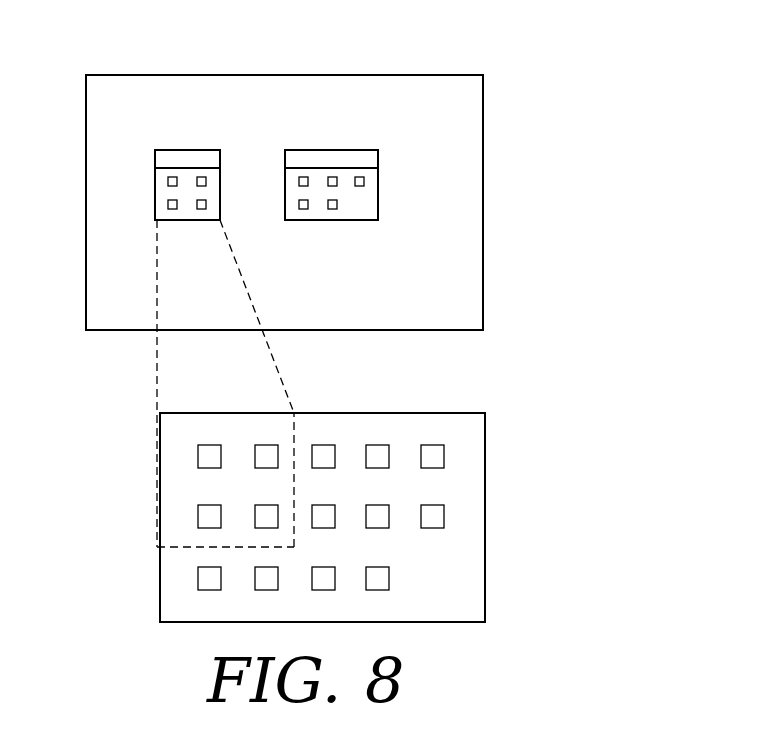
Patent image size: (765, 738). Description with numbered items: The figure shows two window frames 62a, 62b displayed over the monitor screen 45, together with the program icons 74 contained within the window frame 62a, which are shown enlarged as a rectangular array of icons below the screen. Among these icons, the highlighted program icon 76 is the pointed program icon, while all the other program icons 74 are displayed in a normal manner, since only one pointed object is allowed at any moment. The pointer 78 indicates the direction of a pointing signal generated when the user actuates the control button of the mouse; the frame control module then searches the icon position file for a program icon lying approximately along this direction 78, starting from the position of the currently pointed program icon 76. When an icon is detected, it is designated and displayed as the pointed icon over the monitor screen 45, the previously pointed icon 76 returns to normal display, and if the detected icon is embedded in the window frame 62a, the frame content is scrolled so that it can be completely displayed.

The monitor screen 45 is at (483, 175).
The window frame 62a is at (168, 147).
The window frame 62b is at (368, 147).
The program icons 74 is at (329, 517).
The highlighted program icon 76 is at (200, 455).
The pointer 78 is at (246, 499).